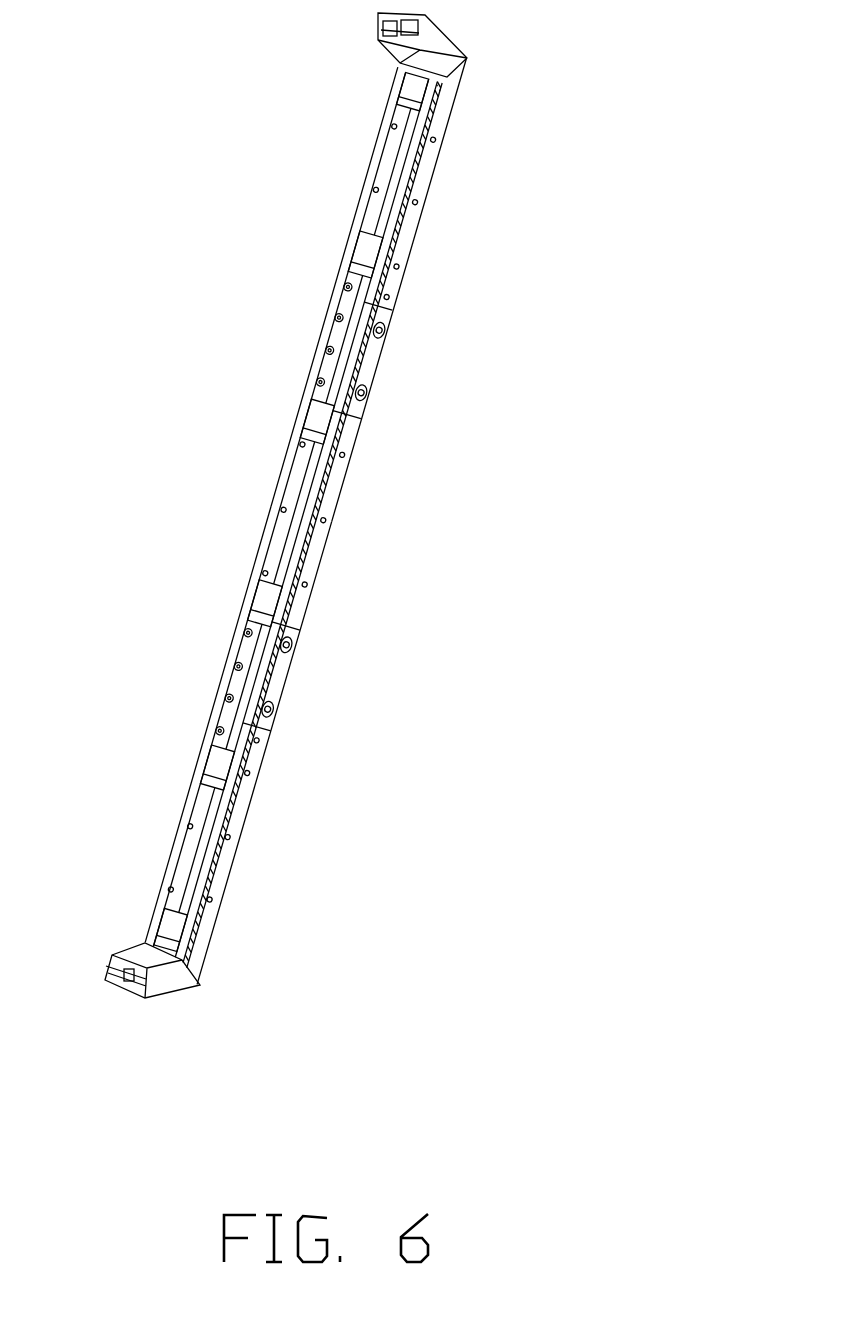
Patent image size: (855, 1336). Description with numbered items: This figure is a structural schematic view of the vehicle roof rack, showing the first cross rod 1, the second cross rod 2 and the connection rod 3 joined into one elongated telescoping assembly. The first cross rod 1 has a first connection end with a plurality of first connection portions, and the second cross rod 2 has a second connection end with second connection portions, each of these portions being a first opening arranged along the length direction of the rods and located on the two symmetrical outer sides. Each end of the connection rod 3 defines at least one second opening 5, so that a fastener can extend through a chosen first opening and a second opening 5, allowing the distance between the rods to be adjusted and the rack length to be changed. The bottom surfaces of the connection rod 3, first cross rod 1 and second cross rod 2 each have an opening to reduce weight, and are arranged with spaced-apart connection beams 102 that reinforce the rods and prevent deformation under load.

The first cross rod 1 is at (437, 158).
The second cross rod 2 is at (204, 932).
The connection rod 3 is at (320, 548).
The second opening 5 is at (385, 338).
The connection beam 102 is at (219, 771).